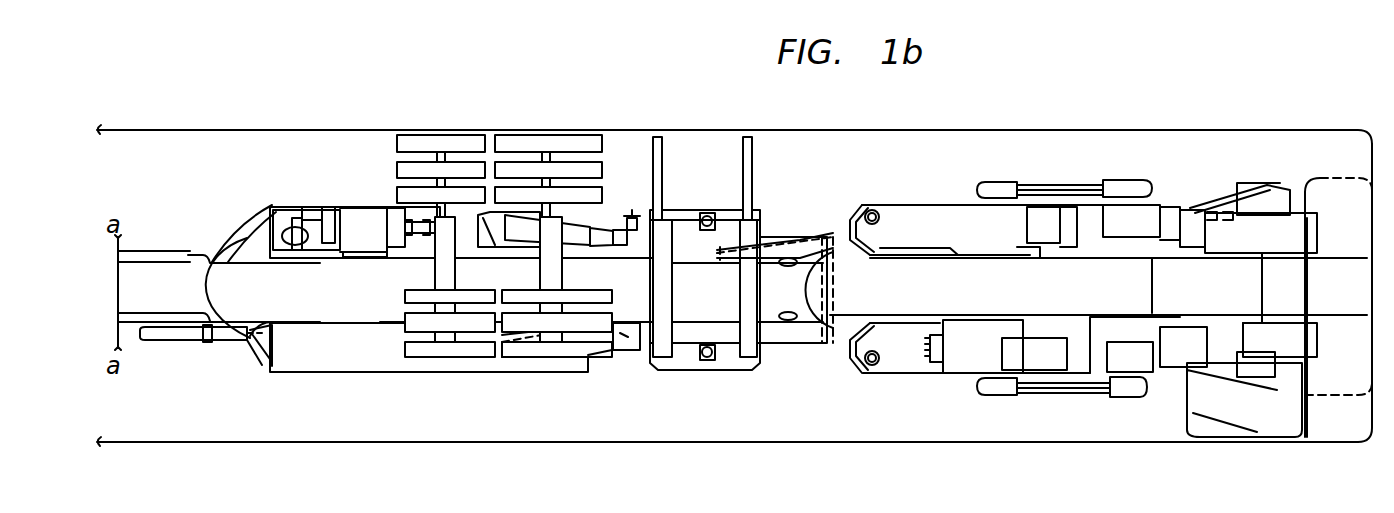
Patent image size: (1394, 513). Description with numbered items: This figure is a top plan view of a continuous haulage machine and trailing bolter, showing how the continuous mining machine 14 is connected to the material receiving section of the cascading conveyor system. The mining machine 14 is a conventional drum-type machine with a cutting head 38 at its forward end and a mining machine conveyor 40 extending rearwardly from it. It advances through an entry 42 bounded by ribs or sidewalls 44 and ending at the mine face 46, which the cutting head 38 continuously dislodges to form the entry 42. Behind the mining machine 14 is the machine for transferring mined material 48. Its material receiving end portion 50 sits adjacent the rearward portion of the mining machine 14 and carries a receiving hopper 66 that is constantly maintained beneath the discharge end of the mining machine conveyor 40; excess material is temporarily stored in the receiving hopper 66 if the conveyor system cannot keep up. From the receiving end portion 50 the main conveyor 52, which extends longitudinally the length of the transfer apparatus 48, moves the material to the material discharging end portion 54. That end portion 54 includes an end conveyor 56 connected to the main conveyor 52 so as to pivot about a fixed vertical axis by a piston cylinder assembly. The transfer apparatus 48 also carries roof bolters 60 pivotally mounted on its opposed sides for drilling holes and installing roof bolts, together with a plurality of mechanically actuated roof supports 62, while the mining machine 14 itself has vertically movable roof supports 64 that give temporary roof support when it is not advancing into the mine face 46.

The continuous mining machine 14 is at (867, 193).
The cutting head 38 is at (1317, 188).
The mining machine conveyor 40 is at (980, 304).
The entry 42 is at (383, 423).
The ribs or sidewalls 44 is at (297, 138).
The mine face 46 is at (1365, 430).
The machine for transferring mined material 48 is at (600, 361).
The material receiving end portion 50 is at (780, 333).
The main conveyor 52 is at (503, 289).
The material discharging end portion 54 is at (151, 243).
The end conveyor 56 is at (172, 299).
The roof bolters 60 is at (628, 232).
The mechanically actuated roof supports 62 is at (410, 168).
The vertically movable roof supports 64 is at (993, 188).
The receiving hopper 66 is at (712, 297).